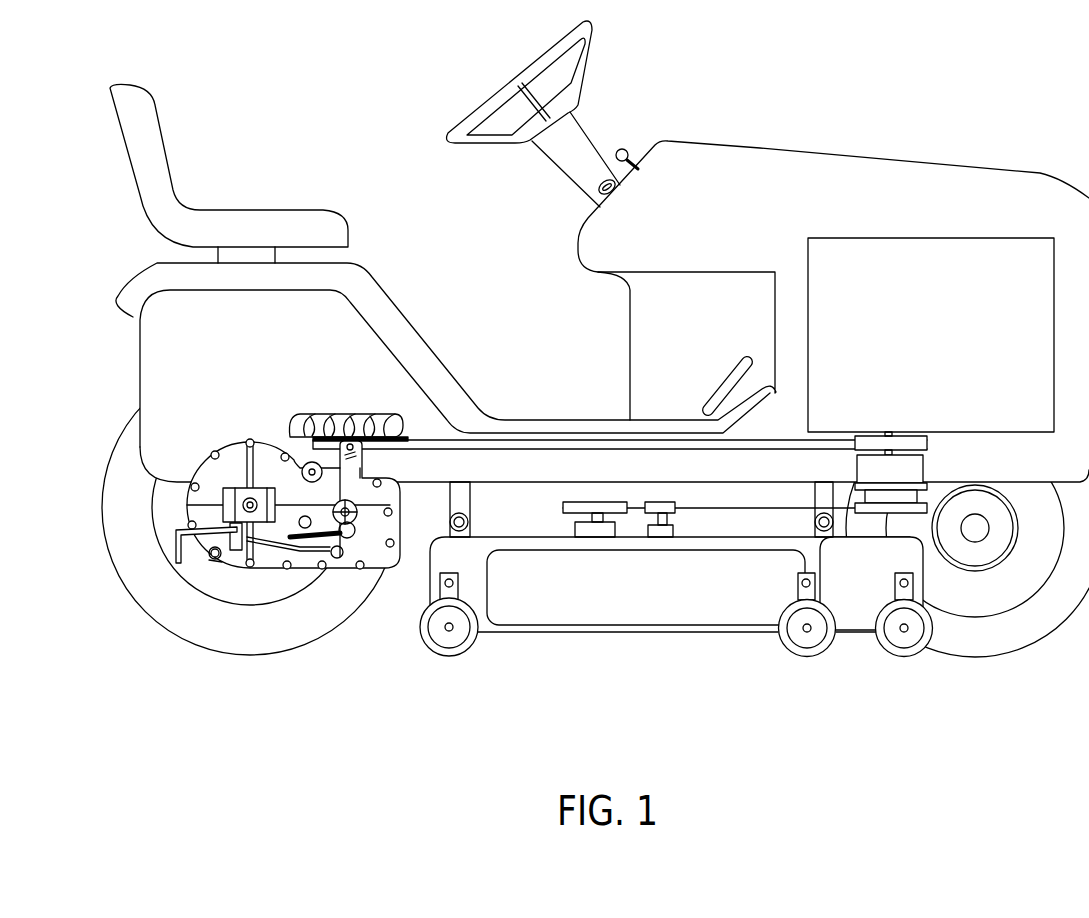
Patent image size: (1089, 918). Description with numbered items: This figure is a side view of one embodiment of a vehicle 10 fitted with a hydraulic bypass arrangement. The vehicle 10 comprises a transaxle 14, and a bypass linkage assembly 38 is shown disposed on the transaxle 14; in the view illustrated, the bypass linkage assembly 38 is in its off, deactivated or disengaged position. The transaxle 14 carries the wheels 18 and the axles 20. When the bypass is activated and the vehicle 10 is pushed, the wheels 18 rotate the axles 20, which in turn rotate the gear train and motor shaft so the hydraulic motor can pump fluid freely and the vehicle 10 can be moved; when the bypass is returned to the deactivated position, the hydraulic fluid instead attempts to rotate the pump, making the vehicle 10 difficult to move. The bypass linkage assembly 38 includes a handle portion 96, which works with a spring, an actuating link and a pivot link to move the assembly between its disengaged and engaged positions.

The vehicle 10 is at (599, 251).
The transaxle 14 is at (237, 404).
The wheels 18 is at (263, 642).
The axles 20 is at (238, 507).
The bypass linkage assembly 38 is at (228, 563).
The handle portion 96 is at (172, 549).